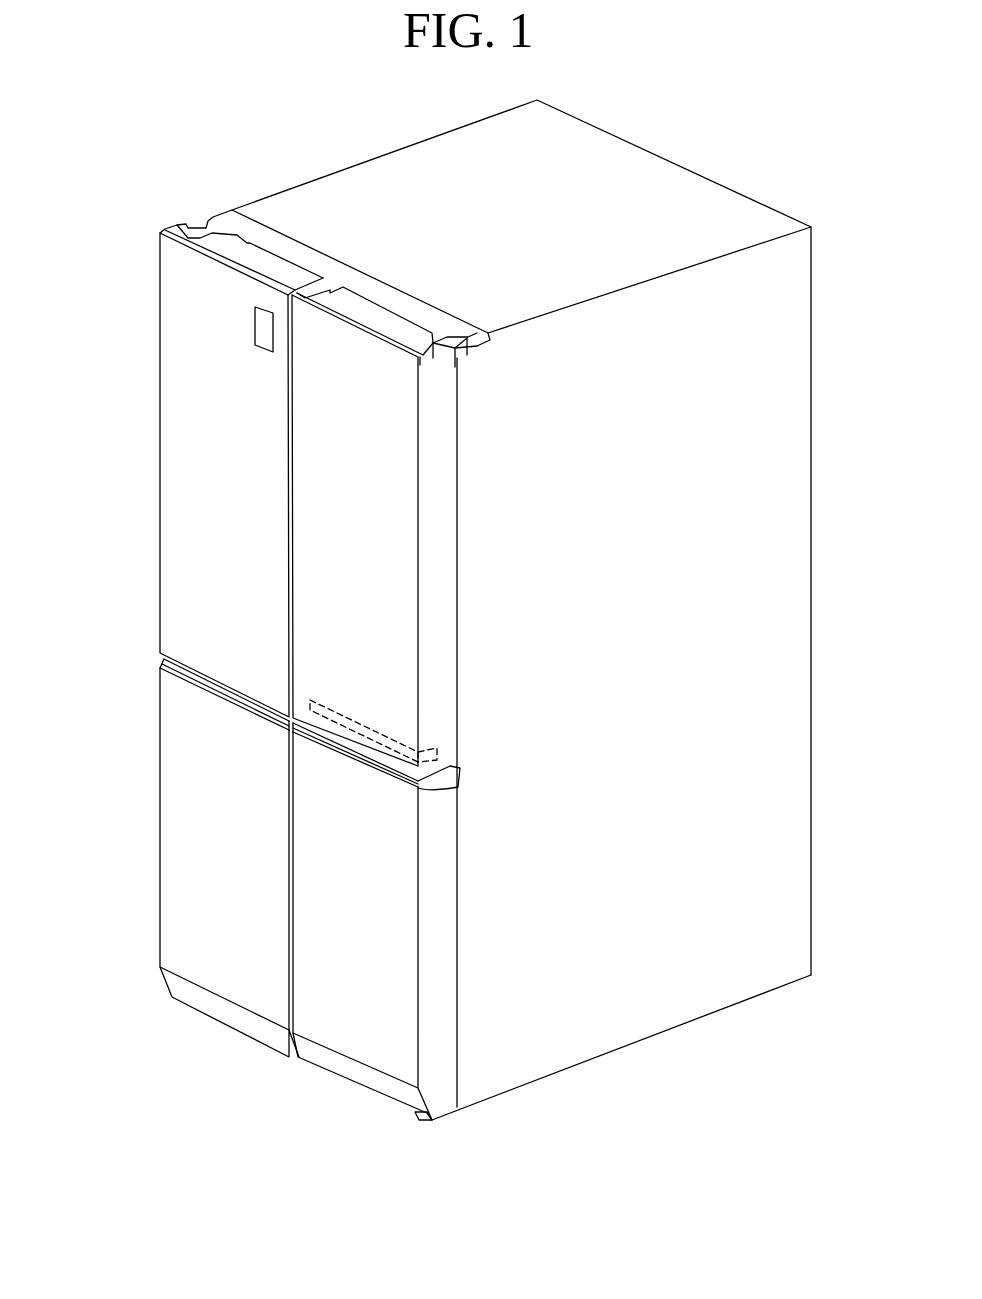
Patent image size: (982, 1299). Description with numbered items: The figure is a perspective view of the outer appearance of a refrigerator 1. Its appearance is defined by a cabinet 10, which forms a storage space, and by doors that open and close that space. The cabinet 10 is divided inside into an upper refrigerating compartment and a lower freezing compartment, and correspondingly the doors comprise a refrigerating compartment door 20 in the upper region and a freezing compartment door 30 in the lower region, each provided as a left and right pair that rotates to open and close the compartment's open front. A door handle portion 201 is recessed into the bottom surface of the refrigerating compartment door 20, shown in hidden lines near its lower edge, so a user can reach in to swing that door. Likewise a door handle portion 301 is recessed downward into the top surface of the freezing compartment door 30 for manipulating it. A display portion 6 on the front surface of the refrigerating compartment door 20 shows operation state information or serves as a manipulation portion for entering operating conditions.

The refrigerator 1 is at (200, 199).
The cabinet 10 is at (706, 180).
The display portion 6 is at (258, 326).
The refrigerating compartment door 20 is at (290, 578).
The freezing compartment door 30 is at (290, 930).
The door handle portion 201 is at (455, 748).
The door handle portion 301 is at (430, 787).